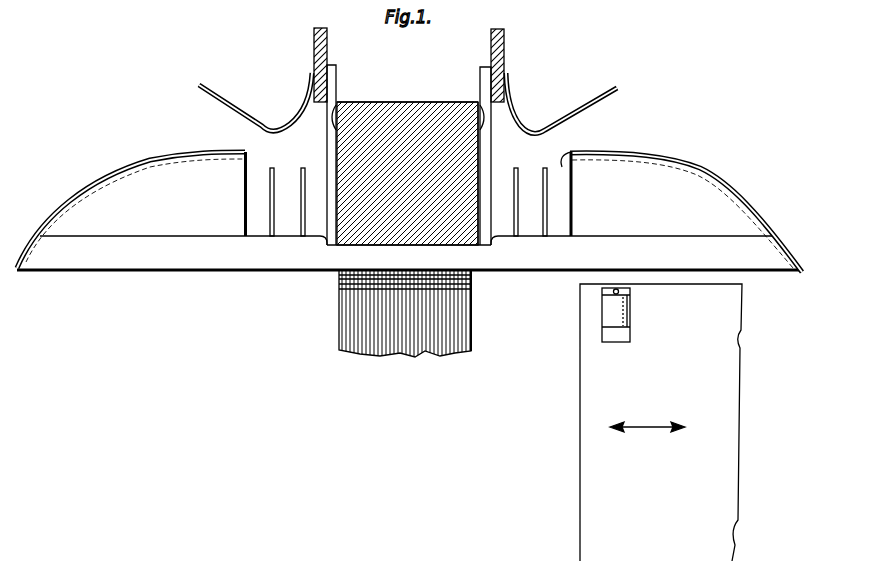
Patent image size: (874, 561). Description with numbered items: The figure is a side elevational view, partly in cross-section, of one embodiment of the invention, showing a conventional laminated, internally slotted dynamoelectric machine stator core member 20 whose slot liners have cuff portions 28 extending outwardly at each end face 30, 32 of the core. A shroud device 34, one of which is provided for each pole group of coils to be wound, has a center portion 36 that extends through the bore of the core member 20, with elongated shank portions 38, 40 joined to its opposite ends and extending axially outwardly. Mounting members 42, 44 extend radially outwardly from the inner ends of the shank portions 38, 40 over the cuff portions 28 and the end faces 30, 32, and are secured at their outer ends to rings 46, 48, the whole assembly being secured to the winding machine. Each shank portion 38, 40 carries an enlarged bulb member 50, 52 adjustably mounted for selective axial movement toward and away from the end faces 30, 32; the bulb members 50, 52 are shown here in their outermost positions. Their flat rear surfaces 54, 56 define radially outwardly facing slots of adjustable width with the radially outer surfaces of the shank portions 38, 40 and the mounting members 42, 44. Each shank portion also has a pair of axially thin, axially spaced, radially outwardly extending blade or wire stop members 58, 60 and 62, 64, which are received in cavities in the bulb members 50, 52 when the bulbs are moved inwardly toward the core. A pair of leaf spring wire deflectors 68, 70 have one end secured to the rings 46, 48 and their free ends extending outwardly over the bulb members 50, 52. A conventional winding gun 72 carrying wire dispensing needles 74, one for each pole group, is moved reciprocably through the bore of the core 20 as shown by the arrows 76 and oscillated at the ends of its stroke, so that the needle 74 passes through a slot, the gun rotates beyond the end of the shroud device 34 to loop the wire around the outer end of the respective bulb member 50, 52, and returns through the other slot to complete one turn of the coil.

The stator core member 20 is at (472, 322).
The cuff portion 28 is at (477, 195).
The end face 30 is at (338, 101).
The end face 32 is at (478, 98).
The shroud device 34 is at (645, 126).
The center portion 36 is at (368, 257).
The shank portion 38 is at (165, 263).
The shank portion 40 is at (712, 263).
The mounting member 42 is at (327, 150).
The mounting member 44 is at (489, 133).
The ring 46 is at (327, 50).
The ring 48 is at (504, 46).
The bulb member 50 is at (140, 190).
The bulb member 52 is at (664, 175).
The flat rear surface 54 is at (244, 200).
The flat rear surface 56 is at (573, 152).
The blade or wire stop member 58 is at (270, 184).
The blade or wire stop member 60 is at (298, 188).
The blade or wire stop member 62 is at (519, 202).
The blade or wire stop member 64 is at (543, 190).
The leaf spring wire deflector 68 is at (232, 108).
The leaf spring wire deflector 70 is at (560, 120).
The winding gun 72 is at (738, 385).
The wire dispensing needle 74 is at (630, 317).
The arrows 76 is at (655, 428).